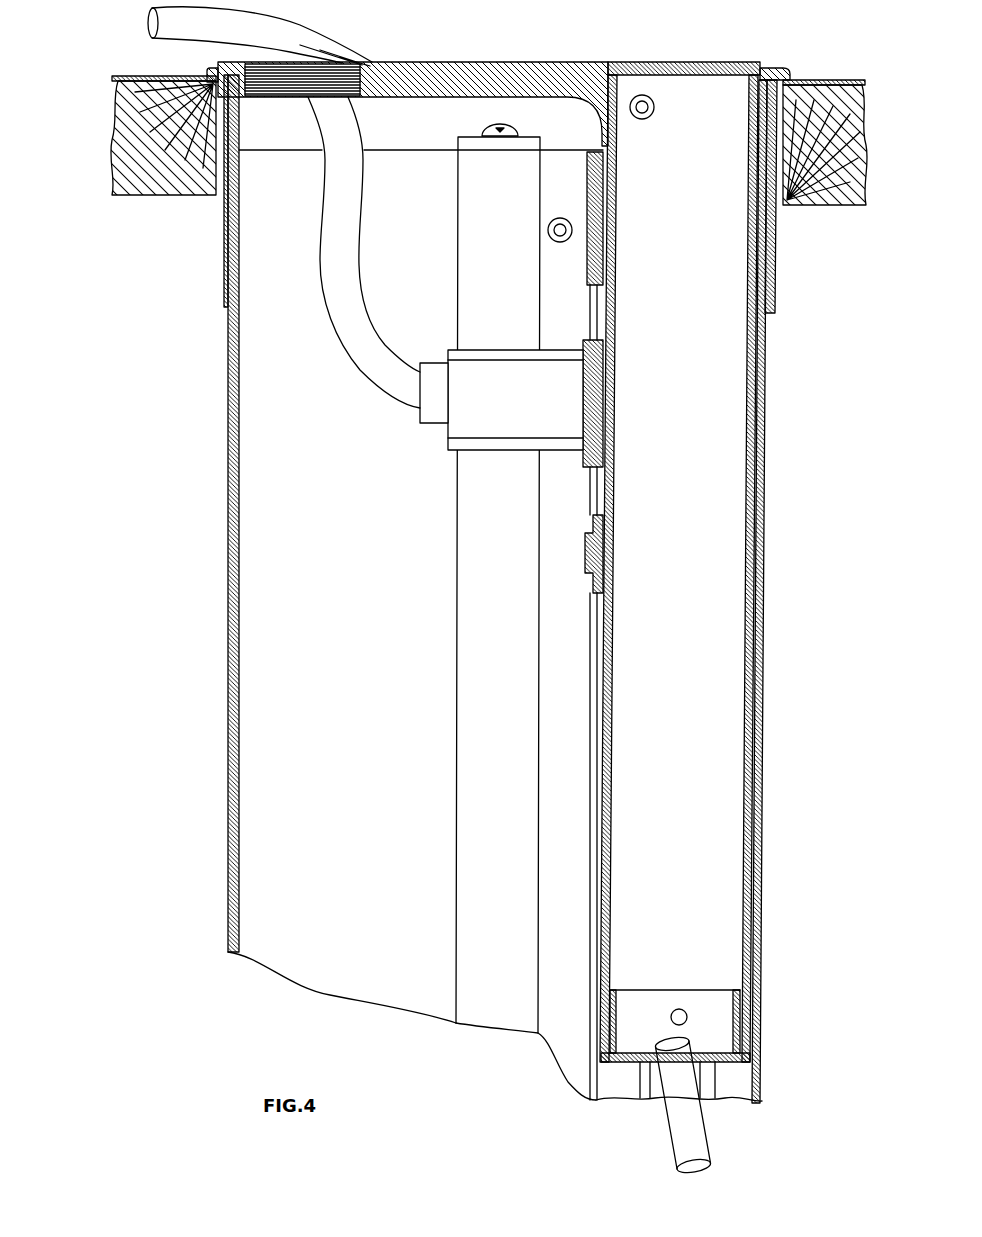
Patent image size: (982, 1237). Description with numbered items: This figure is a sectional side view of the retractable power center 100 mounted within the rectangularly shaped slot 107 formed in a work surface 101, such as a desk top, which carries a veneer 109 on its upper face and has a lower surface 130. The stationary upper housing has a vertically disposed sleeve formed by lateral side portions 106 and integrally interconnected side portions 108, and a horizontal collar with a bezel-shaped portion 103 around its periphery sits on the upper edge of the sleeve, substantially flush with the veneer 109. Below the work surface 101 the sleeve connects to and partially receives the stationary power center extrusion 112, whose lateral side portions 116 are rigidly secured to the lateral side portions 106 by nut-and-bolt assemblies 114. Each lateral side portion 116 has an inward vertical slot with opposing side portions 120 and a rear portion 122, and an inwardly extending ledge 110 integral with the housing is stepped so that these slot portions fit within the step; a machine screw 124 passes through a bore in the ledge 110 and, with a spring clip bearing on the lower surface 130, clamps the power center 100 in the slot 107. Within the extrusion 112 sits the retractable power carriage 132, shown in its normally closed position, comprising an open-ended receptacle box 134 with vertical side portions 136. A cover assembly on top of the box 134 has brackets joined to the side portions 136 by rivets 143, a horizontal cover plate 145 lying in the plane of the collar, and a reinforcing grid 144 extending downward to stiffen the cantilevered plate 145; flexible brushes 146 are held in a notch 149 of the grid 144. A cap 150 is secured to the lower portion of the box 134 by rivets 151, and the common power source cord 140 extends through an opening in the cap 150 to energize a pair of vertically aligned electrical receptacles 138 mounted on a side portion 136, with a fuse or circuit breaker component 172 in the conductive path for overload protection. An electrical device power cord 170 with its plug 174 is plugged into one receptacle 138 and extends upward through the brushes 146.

The retractable power center 100 is at (766, 0).
The work surface 101 is at (122, 196).
The bezel-shaped portion 103 is at (212, 72).
The lateral side portion 106 is at (421, 132).
The slot 107 is at (222, 201).
The side portion 108 is at (226, 281).
The veneer 109 is at (126, 76).
The inwardly extending ledge 110 is at (535, 144).
The power center extrusion 112 is at (228, 582).
The nut-and-bolt assembly 114 is at (550, 240).
The lateral side portion 116 is at (342, 781).
The side portion 120 is at (447, 660).
The rear portion 122 is at (495, 565).
The machine screw 124 is at (501, 126).
The lower surface 130 is at (157, 196).
The retractable power carriage 132 is at (622, 1070).
The receptacle box 134 is at (731, 955).
The side portion 136 is at (679, 437).
The electrical receptacle 138 is at (590, 290).
The power source cord 140 is at (713, 1146).
The rivet 143 is at (648, 95).
The reinforcing grid 144 is at (455, 99).
The cover plate 145 is at (603, 62).
The flexible brushes 146 is at (333, 58).
The notch 149 is at (372, 72).
The cap 150 is at (731, 1064).
The rivet 151 is at (681, 1008).
The power cord 170 is at (345, 352).
The fuse or circuit breaker component 172 is at (589, 575).
The plug 174 is at (447, 432).